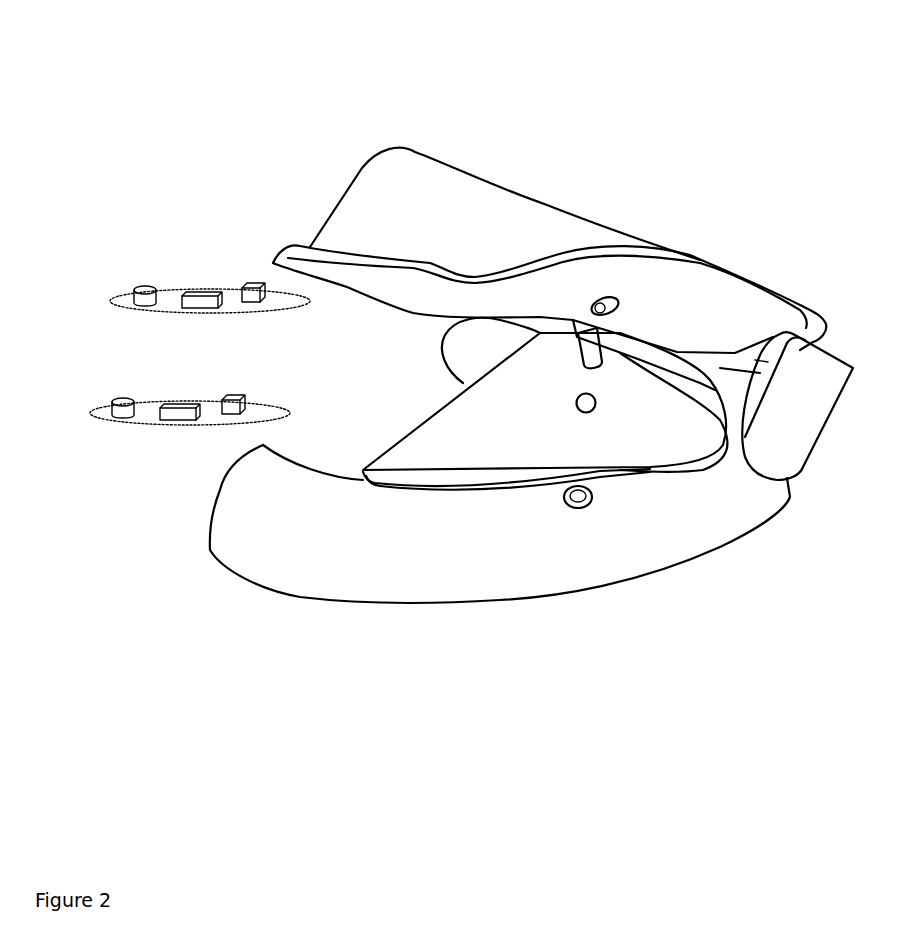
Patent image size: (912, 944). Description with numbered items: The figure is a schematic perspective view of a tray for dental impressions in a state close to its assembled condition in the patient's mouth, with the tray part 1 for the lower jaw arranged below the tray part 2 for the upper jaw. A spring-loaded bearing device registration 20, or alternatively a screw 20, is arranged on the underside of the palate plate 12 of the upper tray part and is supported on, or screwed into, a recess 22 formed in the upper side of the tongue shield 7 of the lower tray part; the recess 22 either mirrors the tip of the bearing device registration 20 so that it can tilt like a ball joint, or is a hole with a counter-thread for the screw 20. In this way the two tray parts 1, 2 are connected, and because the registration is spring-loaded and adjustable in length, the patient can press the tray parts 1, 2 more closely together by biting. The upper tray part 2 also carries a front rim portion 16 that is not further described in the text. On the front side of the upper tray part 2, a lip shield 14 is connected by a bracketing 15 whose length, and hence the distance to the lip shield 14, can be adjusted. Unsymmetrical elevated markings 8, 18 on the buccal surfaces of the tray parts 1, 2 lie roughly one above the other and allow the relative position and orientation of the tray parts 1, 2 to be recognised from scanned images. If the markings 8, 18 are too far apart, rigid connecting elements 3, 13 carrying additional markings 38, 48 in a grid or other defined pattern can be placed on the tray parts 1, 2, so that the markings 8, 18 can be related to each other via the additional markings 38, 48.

The tray part for the lower jaw 1 is at (531, 529).
The tray part for the upper jaw 2 is at (514, 235).
The rigid connecting element 3 is at (169, 523).
The tongue shield 7 is at (560, 382).
The marking 8 is at (566, 585).
The palate plate 12 is at (505, 173).
The rigid connecting element 13 is at (188, 160).
The lip shield 14 is at (797, 484).
The bracketing 15 is at (731, 512).
The front lip 16 is at (549, 218).
The marking 18 is at (625, 209).
The bearing device registration 20 is at (667, 241).
The recess 22 is at (612, 538).
The additional markings 38 is at (178, 523).
The additional markings 48 is at (199, 157).